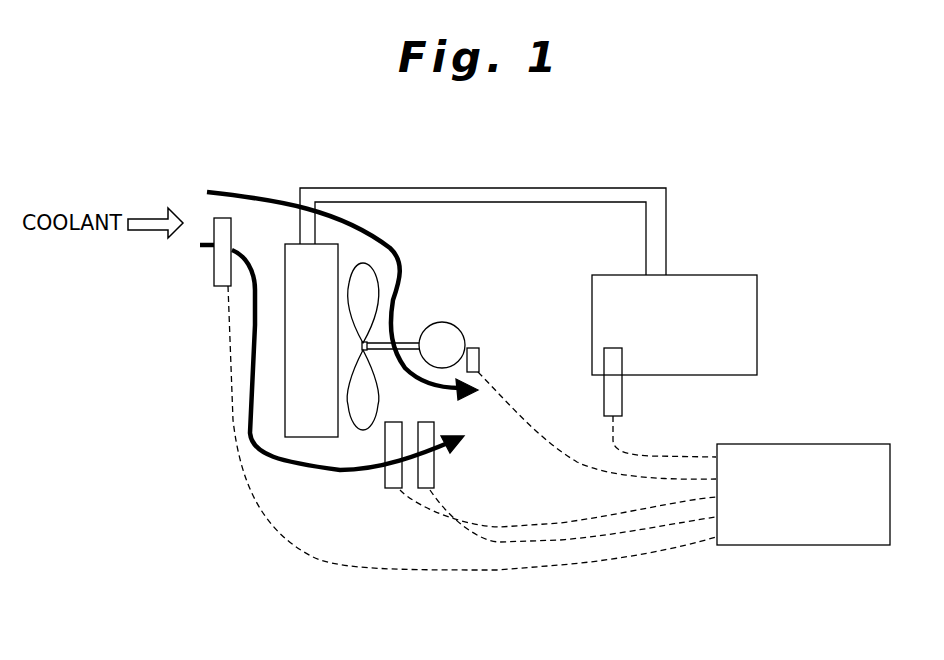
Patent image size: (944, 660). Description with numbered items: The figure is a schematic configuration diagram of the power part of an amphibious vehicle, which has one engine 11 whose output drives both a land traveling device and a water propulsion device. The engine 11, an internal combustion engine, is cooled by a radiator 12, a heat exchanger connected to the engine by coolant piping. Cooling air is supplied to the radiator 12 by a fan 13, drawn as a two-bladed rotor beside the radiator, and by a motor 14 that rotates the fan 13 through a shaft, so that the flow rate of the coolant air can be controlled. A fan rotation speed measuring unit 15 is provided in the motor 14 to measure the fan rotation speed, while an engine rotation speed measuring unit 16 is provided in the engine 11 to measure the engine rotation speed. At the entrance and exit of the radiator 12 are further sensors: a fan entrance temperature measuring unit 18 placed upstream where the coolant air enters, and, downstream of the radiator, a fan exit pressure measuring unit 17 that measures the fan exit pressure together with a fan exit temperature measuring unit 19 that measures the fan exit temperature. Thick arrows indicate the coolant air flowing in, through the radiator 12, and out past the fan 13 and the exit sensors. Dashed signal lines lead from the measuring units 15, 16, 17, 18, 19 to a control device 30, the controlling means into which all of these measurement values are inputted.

The engine 11 is at (713, 275).
The radiator 12 is at (338, 252).
The fan 13 is at (373, 275).
The motor 14 is at (445, 322).
The fan rotation speed measuring unit 15 is at (480, 352).
The engine rotation speed measuring unit 16 is at (603, 398).
The fan exit pressure measuring unit 17 is at (424, 490).
The fan entrance temperature measuring unit 18 is at (212, 271).
The fan exit temperature measuring unit 19 is at (391, 490).
The control device 30 is at (813, 444).